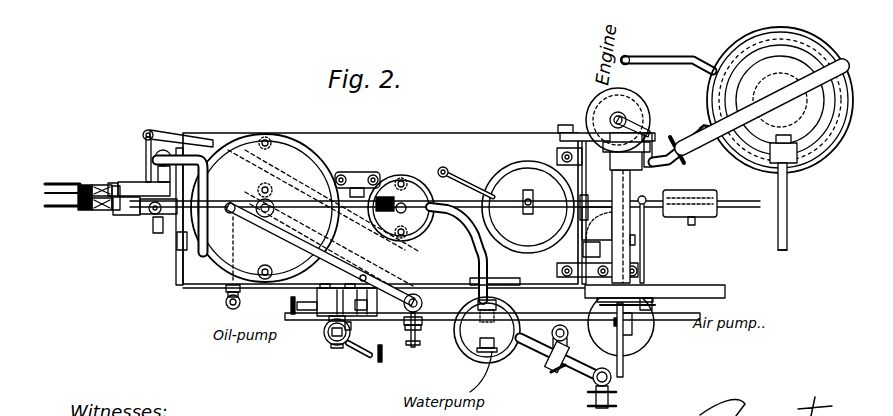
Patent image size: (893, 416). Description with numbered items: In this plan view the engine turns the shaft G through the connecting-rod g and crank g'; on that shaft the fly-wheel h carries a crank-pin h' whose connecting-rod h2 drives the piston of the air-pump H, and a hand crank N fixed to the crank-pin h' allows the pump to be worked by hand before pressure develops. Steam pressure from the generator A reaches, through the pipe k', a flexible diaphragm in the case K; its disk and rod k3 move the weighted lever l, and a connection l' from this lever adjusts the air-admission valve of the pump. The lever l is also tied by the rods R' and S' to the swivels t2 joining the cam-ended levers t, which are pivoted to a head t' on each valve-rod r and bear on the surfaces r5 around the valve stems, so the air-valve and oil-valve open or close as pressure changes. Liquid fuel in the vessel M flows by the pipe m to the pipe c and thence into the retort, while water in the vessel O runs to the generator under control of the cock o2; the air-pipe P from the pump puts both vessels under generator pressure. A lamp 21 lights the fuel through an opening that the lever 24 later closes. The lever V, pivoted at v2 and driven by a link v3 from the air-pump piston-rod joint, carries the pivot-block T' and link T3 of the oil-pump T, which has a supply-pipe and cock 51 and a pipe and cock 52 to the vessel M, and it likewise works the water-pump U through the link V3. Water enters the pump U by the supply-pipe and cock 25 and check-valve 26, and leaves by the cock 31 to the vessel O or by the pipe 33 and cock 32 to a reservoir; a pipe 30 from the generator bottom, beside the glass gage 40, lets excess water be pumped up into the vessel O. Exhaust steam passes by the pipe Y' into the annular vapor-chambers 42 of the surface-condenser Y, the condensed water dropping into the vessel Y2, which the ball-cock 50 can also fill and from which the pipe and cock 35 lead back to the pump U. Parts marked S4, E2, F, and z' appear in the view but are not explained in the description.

The generator A is at (410, 206).
The frame bracket S4 is at (181, 240).
The water-holding vessel O is at (305, 212).
The pipe c is at (155, 160).
The air-pipe P is at (164, 146).
The cam-levers t is at (62, 200).
The rod R' is at (61, 218).
The rod S' is at (73, 169).
The head t' is at (93, 194).
The movable swivel t2 is at (88, 184).
The valve rod r is at (110, 182).
The bearing-surfaces r5 is at (120, 182).
The cock o2 is at (150, 213).
The lamp 21 is at (156, 233).
The valve or lever 24 is at (177, 248).
The lever l is at (394, 201).
The pipe m is at (355, 174).
The liquid hydrocarbon vessel M is at (407, 190).
The pipe 30 is at (421, 302).
The case K is at (528, 207).
The diaphragm disk and rod k3 is at (534, 208).
The pipe k' is at (465, 181).
The glass gage 40 is at (227, 304).
The oil-pump T is at (341, 314).
The pivot-block T' is at (364, 331).
The link T3 is at (334, 348).
The pivot v2 is at (368, 309).
The pipe and cock 52 is at (294, 305).
The supply-pipe and cock 51 is at (373, 354).
The cock 31 is at (413, 339).
The lever V is at (422, 333).
The water-pump U is at (487, 328).
The water pump valve V3 is at (492, 372).
The pipe 33 is at (569, 338).
The cock 32 is at (553, 368).
The check-valve 26 is at (559, 372).
The water-supply pipe and cock 25 is at (595, 388).
The air-pump H is at (608, 333).
The link v3 is at (630, 324).
The crank N is at (623, 358).
The fly-wheel h is at (655, 289).
The crank-pin h' is at (641, 313).
The connecting-rod h2 is at (648, 312).
The chamber E2 is at (597, 223).
The shaft G is at (623, 226).
The engine flywheel F is at (618, 120).
The connecting-rod g is at (661, 139).
The crank g' is at (679, 138).
The pipe Y' is at (707, 145).
The pipe and cock 35 is at (667, 57).
The surface-condenser Y is at (780, 100).
The annular vapor-chambers 42 is at (780, 100).
The water-holding vessel Y2 is at (813, 35).
The supply-pipe and ball-cock 50 is at (787, 192).
The valve box z' is at (690, 200).
The connection l' is at (645, 230).